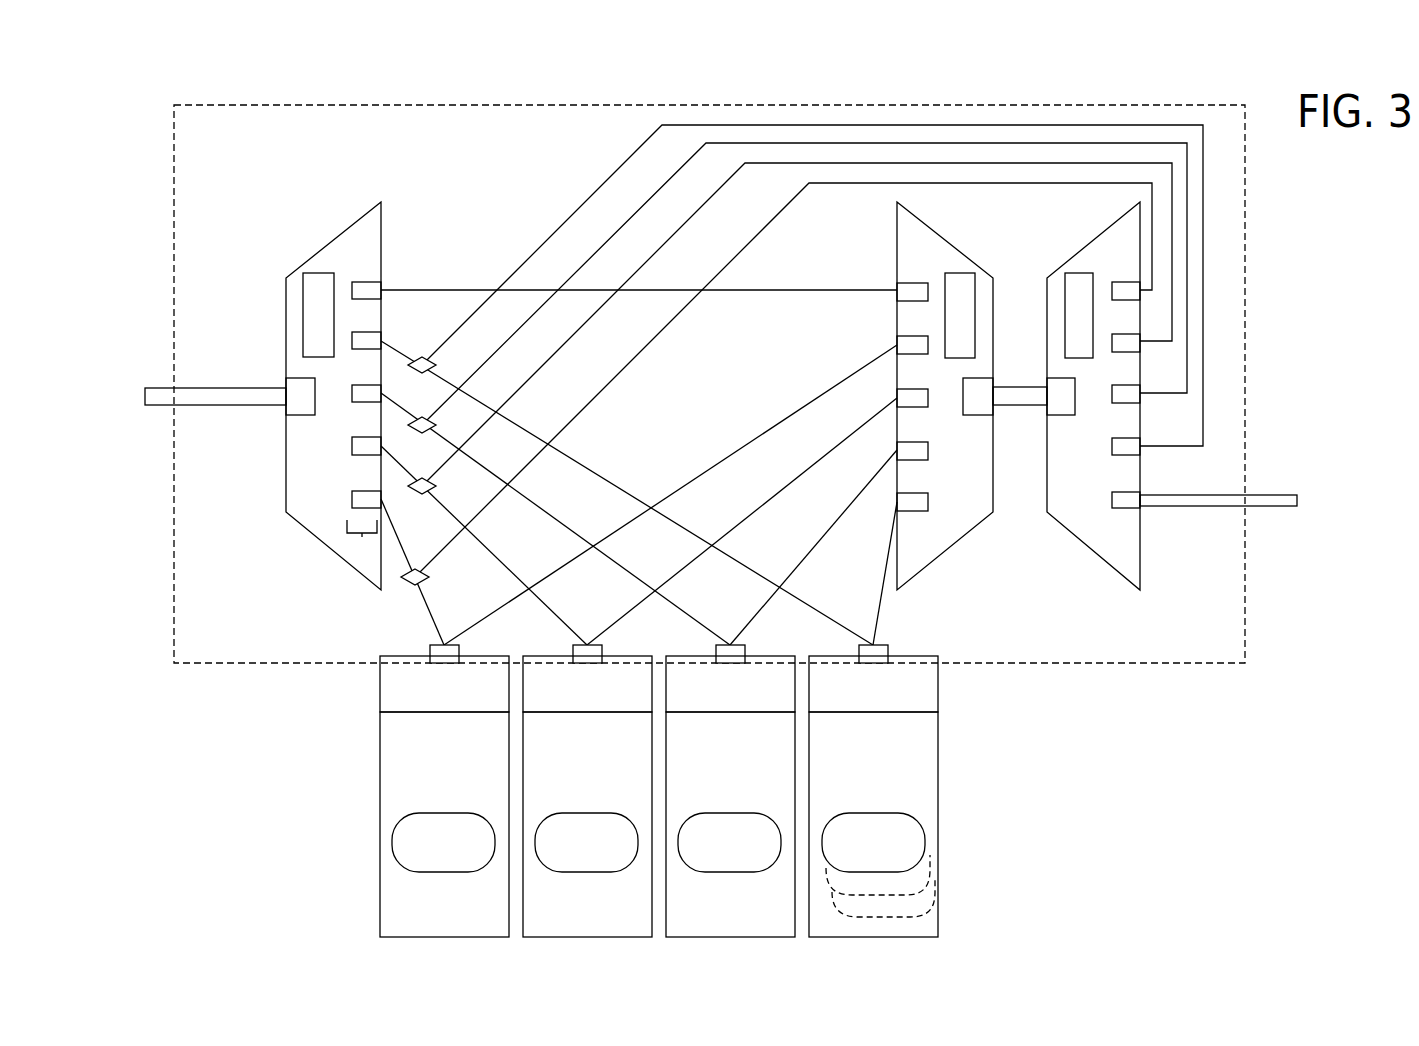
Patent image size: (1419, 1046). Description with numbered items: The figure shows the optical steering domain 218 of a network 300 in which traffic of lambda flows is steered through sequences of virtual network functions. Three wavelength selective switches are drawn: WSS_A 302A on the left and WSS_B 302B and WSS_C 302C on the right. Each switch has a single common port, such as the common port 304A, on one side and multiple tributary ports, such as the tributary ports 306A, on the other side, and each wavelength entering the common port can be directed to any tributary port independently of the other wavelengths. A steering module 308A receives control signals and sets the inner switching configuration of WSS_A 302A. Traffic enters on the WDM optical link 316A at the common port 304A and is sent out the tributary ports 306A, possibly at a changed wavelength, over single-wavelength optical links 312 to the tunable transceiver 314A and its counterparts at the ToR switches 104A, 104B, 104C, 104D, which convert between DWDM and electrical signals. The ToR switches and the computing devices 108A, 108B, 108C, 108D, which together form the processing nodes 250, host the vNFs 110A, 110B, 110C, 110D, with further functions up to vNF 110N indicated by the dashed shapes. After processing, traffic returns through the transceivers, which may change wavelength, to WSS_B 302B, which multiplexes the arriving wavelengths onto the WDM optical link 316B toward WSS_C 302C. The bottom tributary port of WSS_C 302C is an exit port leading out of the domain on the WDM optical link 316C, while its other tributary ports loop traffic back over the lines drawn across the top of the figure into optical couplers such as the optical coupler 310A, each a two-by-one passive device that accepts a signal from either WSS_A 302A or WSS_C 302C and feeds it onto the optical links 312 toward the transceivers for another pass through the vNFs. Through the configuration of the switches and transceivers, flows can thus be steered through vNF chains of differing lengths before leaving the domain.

The network 300 is at (152, 148).
The optical steering domain 218 is at (1235, 654).
The wavelength selective switch WSS_A 302A is at (380, 201).
The wavelength selective switch WSS_B 302B is at (968, 258).
The wavelength selective switch WSS_C 302C is at (1062, 260).
The common port 304A is at (291, 401).
The tributary ports 306A is at (362, 537).
The steering module 308A is at (315, 287).
The optical coupler 310A is at (419, 340).
The single-wavelength optical links 312 is at (680, 328).
The tunable transceiver 314A is at (420, 647).
The WDM optical link 316A is at (212, 388).
The WDM optical link 316B is at (1028, 400).
The WDM optical link 316C is at (1275, 487).
The ToR switch 104A is at (422, 706).
The ToR switch 104B is at (610, 706).
The ToR switch 104C is at (708, 706).
The ToR switch 104D is at (896, 706).
The computing device(s) 108A is at (422, 784).
The computing device(s) 108B is at (610, 784).
The computing device(s) 108C is at (708, 784).
The computing device(s) 108D is at (896, 784).
The vNF 110A is at (422, 864).
The vNF 110B is at (610, 864).
The vNF 110C is at (708, 864).
The vNF 110D is at (896, 864).
The vNF 110N is at (952, 871).
The processing nodes 250 is at (638, 796).